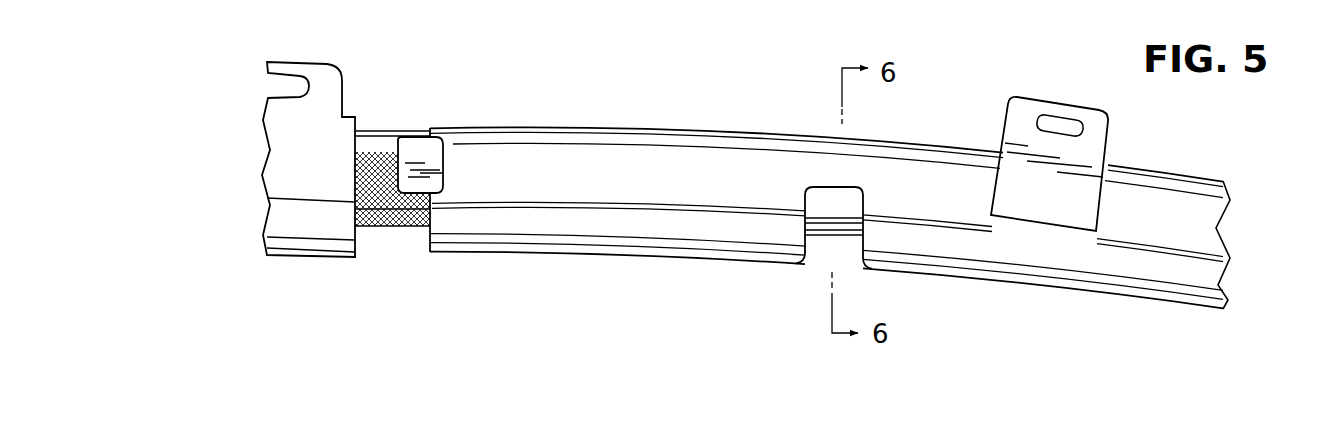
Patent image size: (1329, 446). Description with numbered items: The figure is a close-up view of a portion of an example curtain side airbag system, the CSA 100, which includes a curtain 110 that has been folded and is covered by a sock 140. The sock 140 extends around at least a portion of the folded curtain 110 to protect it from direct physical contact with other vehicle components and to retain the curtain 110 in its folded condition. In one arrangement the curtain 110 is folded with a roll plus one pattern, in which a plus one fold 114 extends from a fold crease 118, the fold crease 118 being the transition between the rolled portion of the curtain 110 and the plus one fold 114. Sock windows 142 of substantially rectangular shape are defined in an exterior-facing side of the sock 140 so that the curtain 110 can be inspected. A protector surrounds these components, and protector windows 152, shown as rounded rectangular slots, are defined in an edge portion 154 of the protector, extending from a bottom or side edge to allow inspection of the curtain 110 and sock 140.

The CSA 100 is at (976, 90).
The curtain 110 is at (423, 157).
The plus one fold 114 is at (833, 205).
The fold crease 118 is at (852, 213).
The sock 140 is at (385, 217).
The sock window 142 is at (404, 155).
The protector window 152 is at (448, 157).
The edge portion 154 is at (432, 212).